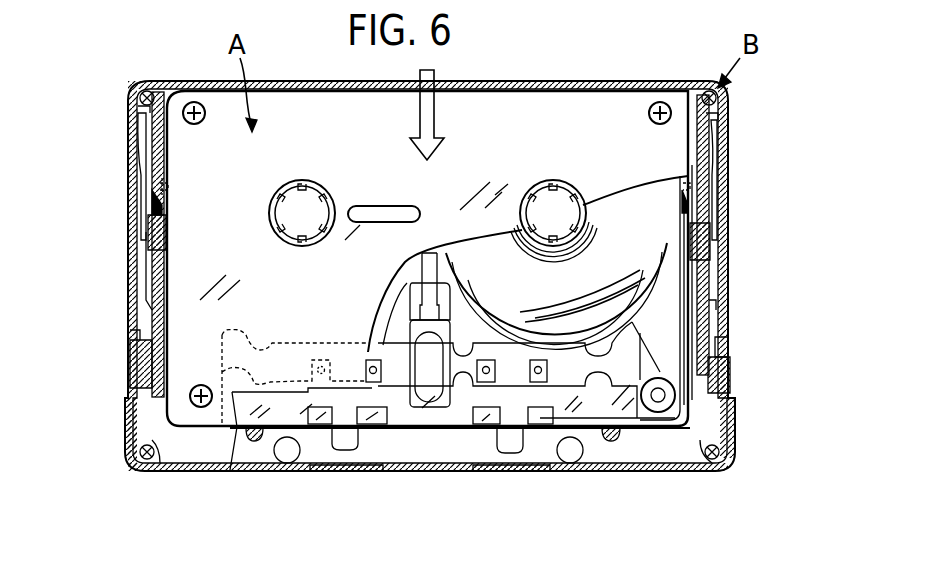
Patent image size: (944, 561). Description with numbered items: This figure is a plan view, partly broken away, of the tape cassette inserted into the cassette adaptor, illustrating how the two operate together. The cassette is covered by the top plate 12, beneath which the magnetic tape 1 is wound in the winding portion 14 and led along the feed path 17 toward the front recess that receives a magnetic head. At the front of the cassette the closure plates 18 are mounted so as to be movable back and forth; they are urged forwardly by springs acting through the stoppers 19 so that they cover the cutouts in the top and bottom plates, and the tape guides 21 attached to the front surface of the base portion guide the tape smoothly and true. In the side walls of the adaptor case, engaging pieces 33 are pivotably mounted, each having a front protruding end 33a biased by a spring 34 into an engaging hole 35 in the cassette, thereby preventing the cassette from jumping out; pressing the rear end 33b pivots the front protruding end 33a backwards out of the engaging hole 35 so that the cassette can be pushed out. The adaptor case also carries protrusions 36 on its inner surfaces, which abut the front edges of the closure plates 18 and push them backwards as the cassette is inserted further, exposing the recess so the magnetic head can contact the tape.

The magnetic tape 1 is at (680, 326).
The top plate 12 is at (200, 258).
The winding portion 14 is at (650, 292).
The feed path 17 is at (730, 422).
The closure plate 18 is at (443, 412).
The stopper 19 is at (403, 407).
The tape guide 21 is at (322, 424).
The engaging piece 33 is at (156, 286).
The front protruding end 33a is at (152, 218).
The rear end 33b is at (130, 367).
The spring 34 is at (146, 140).
The engaging hole 35 is at (130, 190).
The protrusion 36 is at (252, 440).